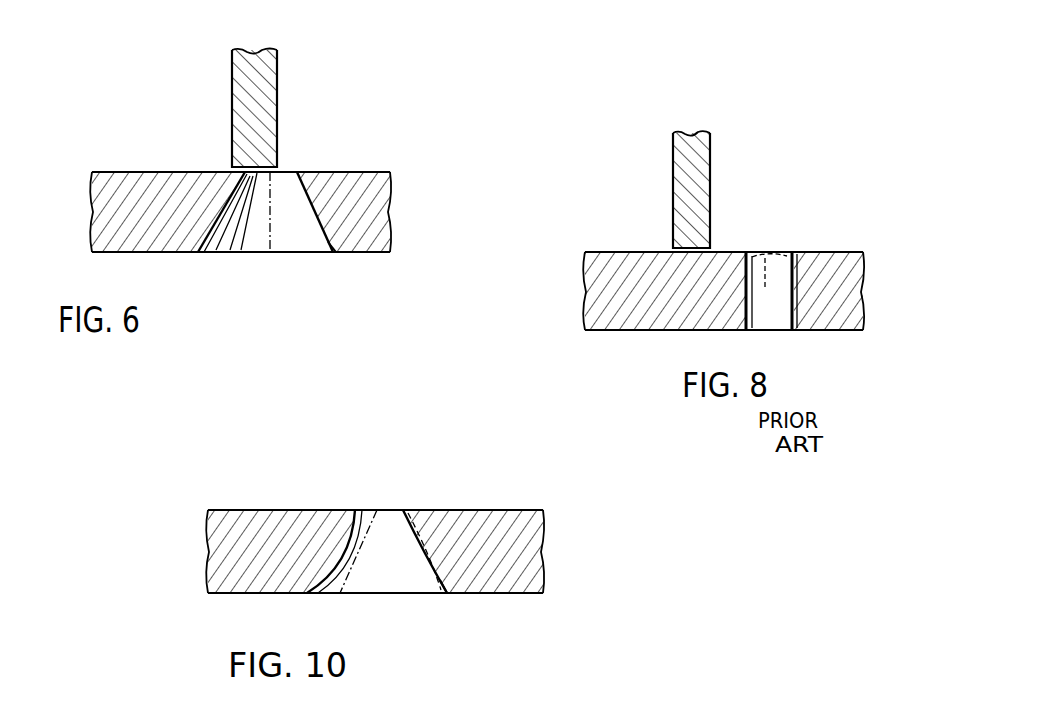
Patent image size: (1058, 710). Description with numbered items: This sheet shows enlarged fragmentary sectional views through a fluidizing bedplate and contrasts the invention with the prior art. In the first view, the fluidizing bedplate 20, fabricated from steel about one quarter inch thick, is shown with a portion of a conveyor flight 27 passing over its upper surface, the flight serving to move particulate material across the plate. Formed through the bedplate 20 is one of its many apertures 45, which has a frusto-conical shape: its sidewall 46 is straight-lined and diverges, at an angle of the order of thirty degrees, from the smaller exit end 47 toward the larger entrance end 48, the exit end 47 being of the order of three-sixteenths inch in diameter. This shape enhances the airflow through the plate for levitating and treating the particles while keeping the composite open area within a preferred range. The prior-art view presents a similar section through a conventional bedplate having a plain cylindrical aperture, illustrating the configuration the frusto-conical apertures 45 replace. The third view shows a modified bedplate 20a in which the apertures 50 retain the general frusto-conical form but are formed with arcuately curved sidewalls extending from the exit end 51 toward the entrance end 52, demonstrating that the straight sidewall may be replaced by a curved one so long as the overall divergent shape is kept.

In FIG. 6, the fluidizing bedplate 20 is at (136, 166).
In FIG. 6, the conveyor flight 27 is at (273, 96).
In FIG. 6, the apertures 45 is at (260, 260).
In FIG. 6, the exit end 47 is at (288, 170).
In FIG. 6, the entrance end 48 is at (307, 253).
In FIG. 6, the sidewall 46 is at (333, 253).
In FIG. 10, the bedplate 20a is at (283, 501).
In FIG. 10, the exit end 51 is at (390, 510).
In FIG. 10, the entrance end 52 is at (390, 595).
In FIG. 10, the apertures 50 is at (437, 593).